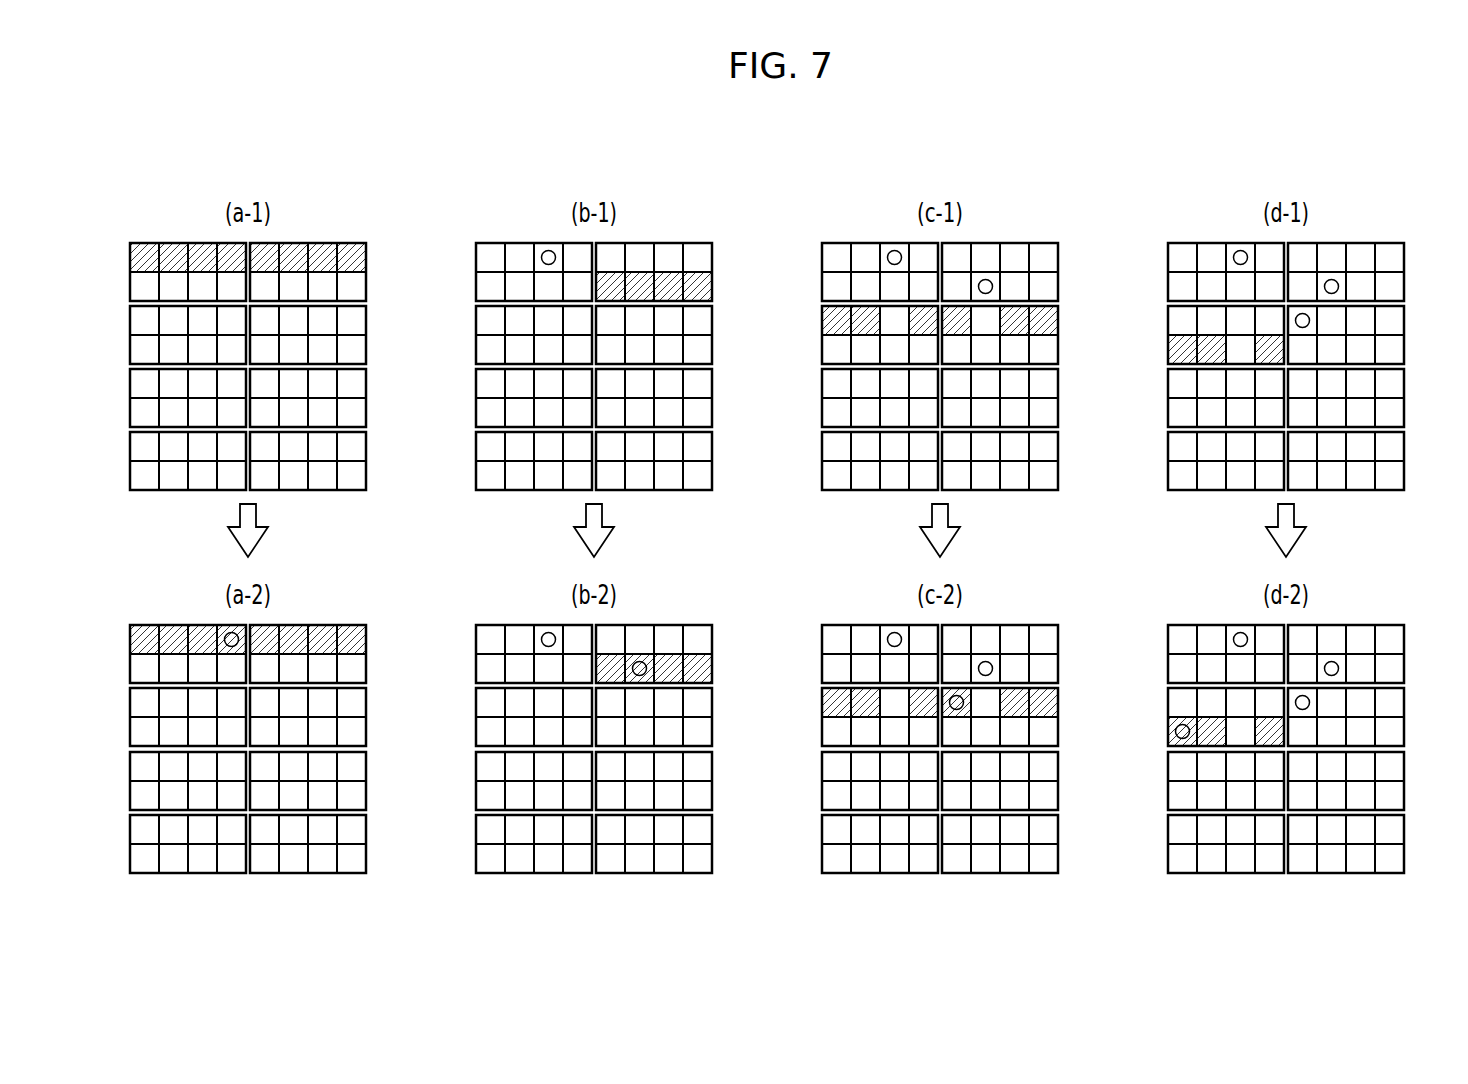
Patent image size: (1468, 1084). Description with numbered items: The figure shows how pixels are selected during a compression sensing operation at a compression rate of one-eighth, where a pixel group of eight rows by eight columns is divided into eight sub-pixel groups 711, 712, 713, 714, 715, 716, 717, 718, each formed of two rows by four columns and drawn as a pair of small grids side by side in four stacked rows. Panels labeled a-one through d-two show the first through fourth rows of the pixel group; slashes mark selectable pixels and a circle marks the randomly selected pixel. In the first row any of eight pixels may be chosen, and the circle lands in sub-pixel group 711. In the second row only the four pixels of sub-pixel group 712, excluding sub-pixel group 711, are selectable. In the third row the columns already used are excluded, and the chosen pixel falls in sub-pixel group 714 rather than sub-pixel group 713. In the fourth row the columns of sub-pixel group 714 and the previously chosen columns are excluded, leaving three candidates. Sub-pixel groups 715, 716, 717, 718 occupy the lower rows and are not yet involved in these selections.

The sub-pixel group 711 is at (130, 272).
The sub-pixel group 712 is at (366, 272).
The sub-pixel group 713 is at (130, 335).
The sub-pixel group 714 is at (366, 335).
The sub-pixel group 715 is at (130, 398).
The sub-pixel group 716 is at (366, 398).
The sub-pixel group 717 is at (130, 461).
The sub-pixel group 718 is at (366, 461).